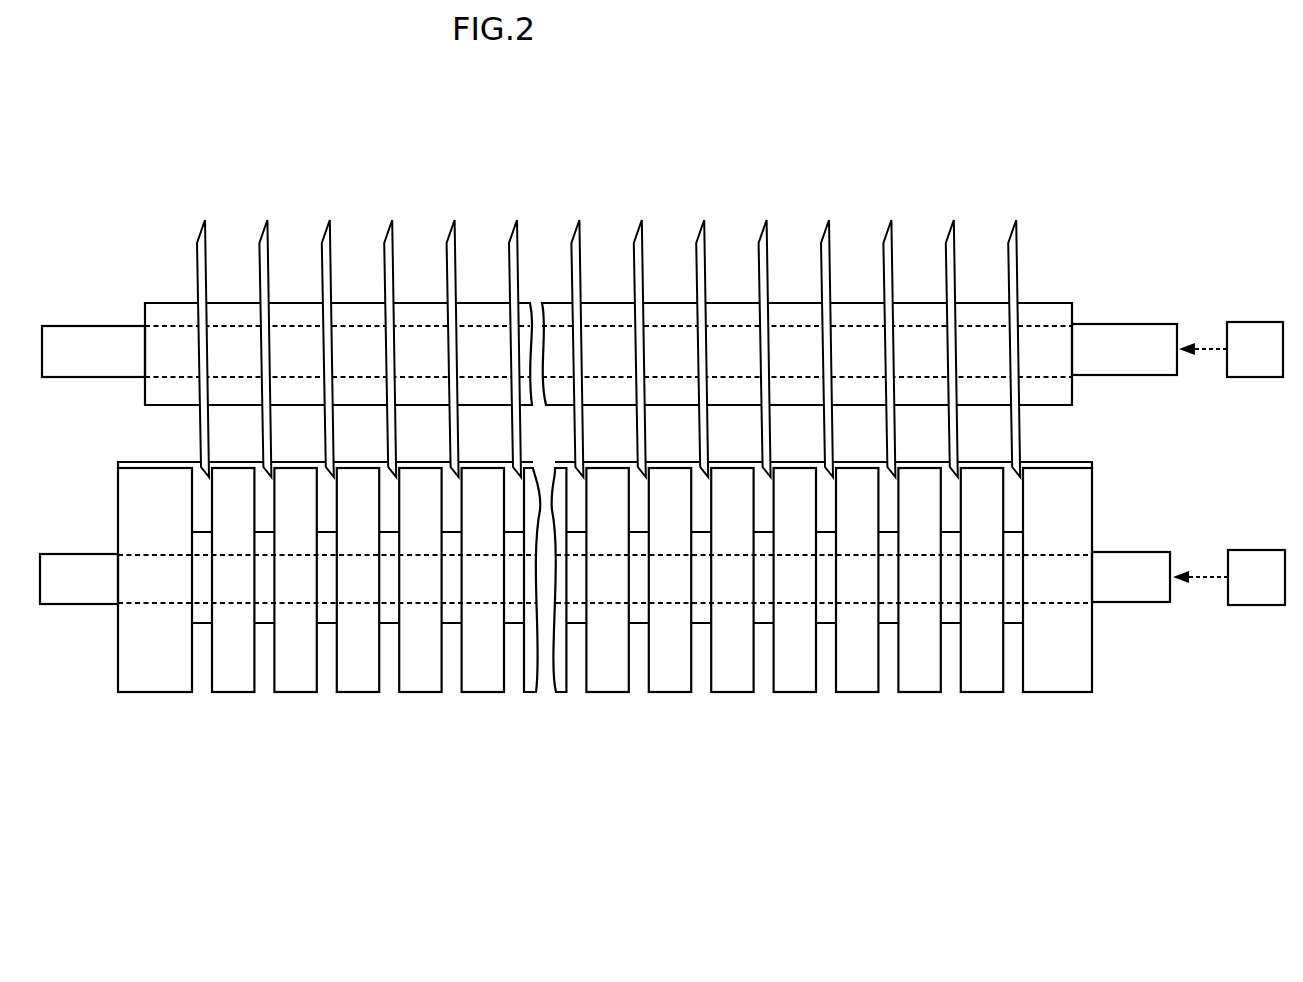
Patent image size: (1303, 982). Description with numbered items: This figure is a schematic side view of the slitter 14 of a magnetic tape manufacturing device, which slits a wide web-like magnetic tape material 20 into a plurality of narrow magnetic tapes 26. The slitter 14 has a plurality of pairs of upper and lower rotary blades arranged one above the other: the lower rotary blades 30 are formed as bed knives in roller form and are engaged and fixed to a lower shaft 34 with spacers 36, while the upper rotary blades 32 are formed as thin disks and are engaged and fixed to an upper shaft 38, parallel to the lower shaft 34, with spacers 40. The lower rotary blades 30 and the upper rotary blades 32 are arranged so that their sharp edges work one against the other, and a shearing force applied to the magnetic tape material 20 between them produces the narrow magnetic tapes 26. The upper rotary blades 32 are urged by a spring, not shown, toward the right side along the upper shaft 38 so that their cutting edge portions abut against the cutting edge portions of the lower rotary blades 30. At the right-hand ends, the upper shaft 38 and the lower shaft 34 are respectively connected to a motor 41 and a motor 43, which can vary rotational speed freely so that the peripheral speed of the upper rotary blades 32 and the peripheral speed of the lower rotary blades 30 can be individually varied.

The slitter 14 is at (634, 148).
The magnetic tape material 20 is at (1041, 472).
The magnetic tapes 26 is at (237, 463).
The lower rotary blades 30 is at (238, 697).
The upper rotary blades 32 is at (205, 250).
The lower shaft 34 is at (1107, 604).
The spacers 36 is at (887, 627).
The upper shaft 38 is at (1113, 320).
The spacers 40 is at (866, 300).
The motor 41 is at (1250, 320).
The motor 43 is at (1263, 548).